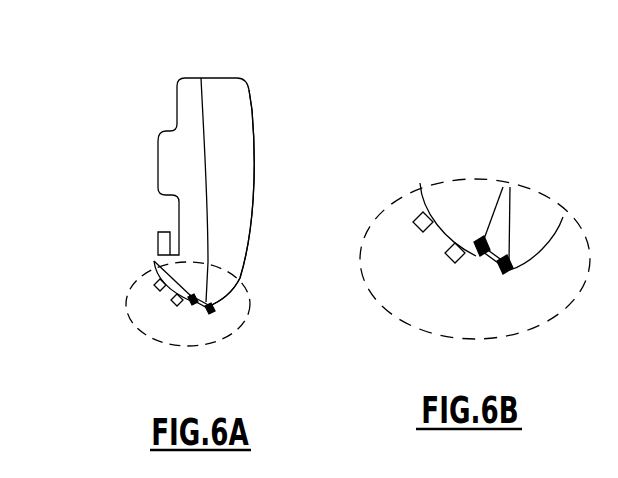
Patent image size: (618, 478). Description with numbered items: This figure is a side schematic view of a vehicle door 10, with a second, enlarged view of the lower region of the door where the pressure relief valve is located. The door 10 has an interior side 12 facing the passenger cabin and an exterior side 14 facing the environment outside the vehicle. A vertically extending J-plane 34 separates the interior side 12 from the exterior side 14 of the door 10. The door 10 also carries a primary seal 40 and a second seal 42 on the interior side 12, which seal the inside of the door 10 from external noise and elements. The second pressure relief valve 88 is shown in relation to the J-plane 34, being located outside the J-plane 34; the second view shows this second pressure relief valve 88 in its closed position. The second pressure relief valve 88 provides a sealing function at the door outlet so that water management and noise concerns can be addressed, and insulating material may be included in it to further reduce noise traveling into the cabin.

In FIG. 6A, the door 10 is at (140, 108).
In FIG. 6A, the interior side 12 is at (156, 167).
In FIG. 6A, the exterior side 14 is at (256, 126).
In FIG. 6A, the J-plane 34 is at (162, 263).
In FIG. 6B, the J-plane 34 is at (490, 218).
In FIG. 6A, the primary seal 40 is at (176, 301).
In FIG. 6B, the primary seal 40 is at (447, 260).
In FIG. 6A, the second seal 42 is at (155, 290).
In FIG. 6B, the second seal 42 is at (416, 228).
In FIG. 6A, the second pressure relief valve 88 is at (199, 316).
In FIG. 6B, the second pressure relief valve 88 is at (512, 266).